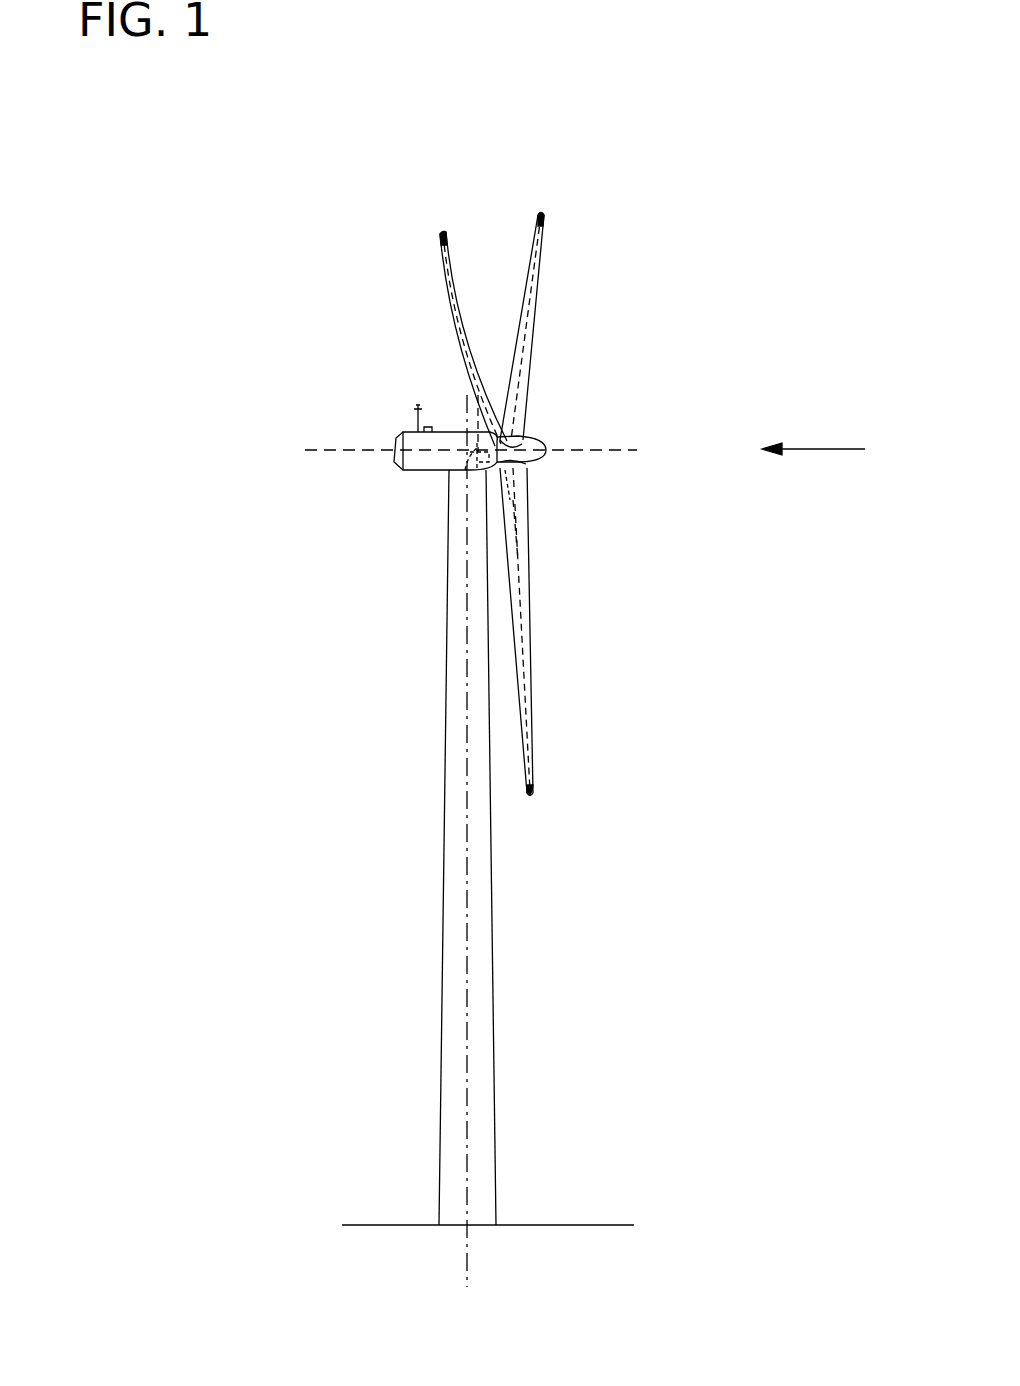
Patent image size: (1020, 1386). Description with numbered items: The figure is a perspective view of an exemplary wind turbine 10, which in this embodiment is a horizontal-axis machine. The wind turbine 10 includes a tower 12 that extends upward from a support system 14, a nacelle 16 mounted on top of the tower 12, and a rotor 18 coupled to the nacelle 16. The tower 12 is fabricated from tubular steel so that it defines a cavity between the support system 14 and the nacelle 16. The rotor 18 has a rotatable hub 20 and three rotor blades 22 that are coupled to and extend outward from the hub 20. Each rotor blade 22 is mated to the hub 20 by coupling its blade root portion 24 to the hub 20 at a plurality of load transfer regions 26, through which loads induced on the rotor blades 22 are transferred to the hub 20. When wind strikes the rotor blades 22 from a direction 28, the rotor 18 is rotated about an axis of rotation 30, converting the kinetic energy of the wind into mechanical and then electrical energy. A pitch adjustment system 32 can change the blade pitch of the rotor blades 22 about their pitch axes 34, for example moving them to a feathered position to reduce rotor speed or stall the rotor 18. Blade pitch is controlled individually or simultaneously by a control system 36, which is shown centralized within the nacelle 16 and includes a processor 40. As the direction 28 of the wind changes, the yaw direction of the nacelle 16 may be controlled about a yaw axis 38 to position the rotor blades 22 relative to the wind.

The wind turbine 10 is at (232, 246).
The tower 12 is at (458, 841).
The support system 14 is at (398, 1225).
The nacelle 16 is at (430, 449).
The rotor 18 is at (523, 498).
The rotatable hub 20 is at (544, 459).
The rotor blade 22 is at (503, 504).
The blade root portion 24 is at (520, 556).
The load transfer regions 26 is at (518, 472).
The direction 28 is at (832, 449).
The axis of rotation 30 is at (603, 453).
The pitch adjustment system 32 is at (510, 500).
The pitch axes 34 is at (441, 236).
The control system 36 is at (470, 478).
The yaw axis 38 is at (470, 888).
The processor 40 is at (478, 395).